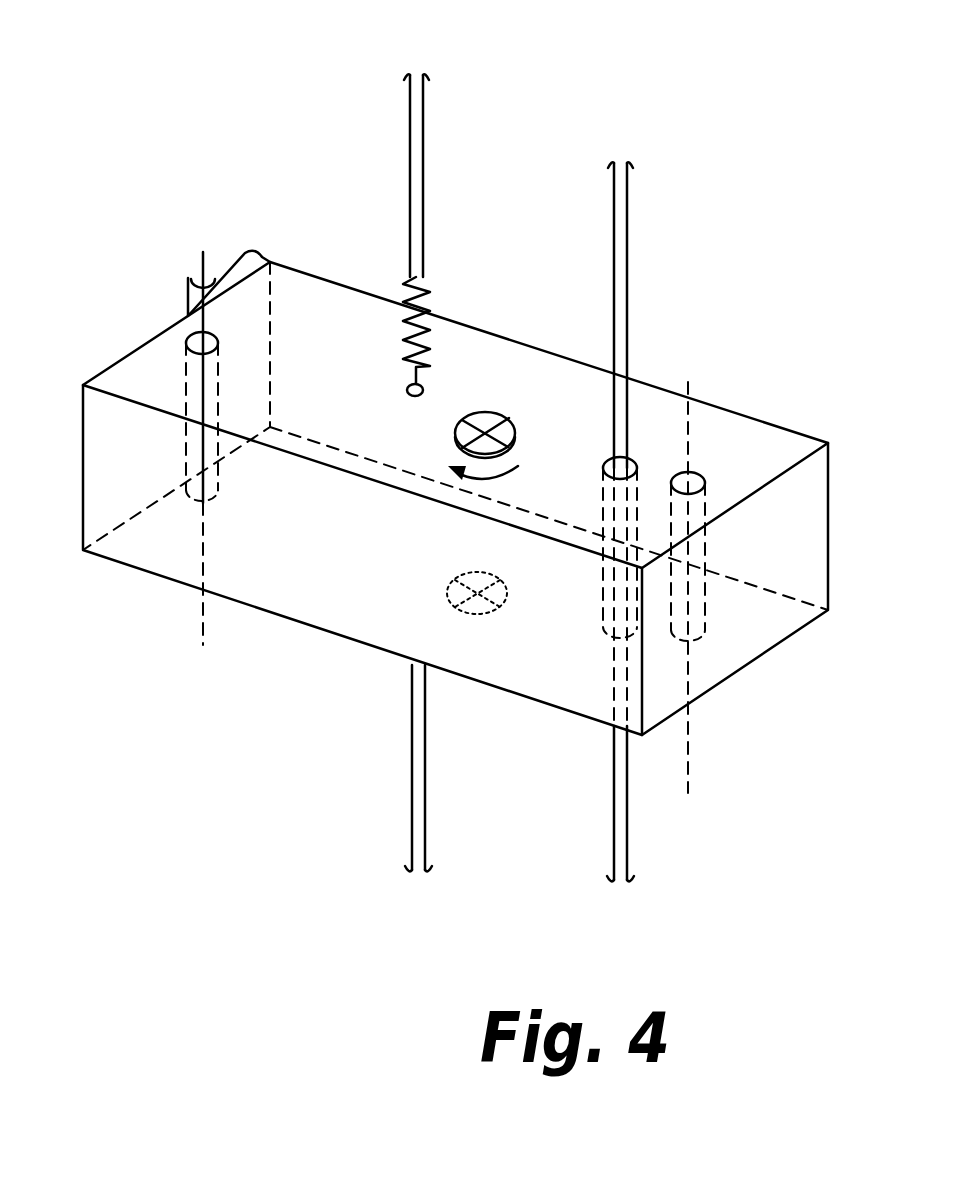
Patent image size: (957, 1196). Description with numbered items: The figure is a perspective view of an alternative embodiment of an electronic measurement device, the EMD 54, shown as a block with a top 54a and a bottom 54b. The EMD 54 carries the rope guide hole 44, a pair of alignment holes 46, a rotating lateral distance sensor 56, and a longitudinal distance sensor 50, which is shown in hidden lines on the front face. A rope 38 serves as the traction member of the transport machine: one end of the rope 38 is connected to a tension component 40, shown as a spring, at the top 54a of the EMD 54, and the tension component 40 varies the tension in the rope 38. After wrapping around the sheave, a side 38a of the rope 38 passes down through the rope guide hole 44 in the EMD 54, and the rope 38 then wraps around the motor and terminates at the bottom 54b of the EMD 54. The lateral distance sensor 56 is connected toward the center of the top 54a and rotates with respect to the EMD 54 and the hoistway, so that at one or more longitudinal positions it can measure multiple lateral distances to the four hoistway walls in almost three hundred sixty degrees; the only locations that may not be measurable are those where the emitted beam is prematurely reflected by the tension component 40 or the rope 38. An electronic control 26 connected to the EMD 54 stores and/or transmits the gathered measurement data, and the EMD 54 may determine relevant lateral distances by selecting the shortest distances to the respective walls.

The electronic control 26 is at (188, 278).
The rope 38 is at (393, 805).
The side of the rope 38a is at (633, 257).
The tension component 40 is at (432, 294).
The rope guide hole 44 is at (632, 462).
The alignment holes 46 is at (187, 343).
The longitudinal distance sensor 50 is at (493, 612).
The EMD 54 is at (536, 128).
The top of the EMD 54a is at (377, 313).
The bottom of the EMD 54b is at (337, 590).
The rotating lateral distance sensor 56 is at (513, 418).